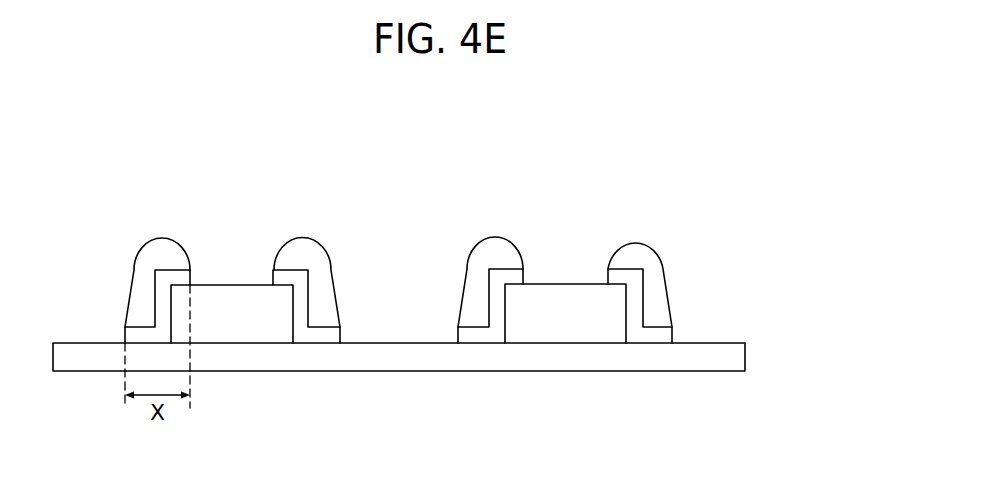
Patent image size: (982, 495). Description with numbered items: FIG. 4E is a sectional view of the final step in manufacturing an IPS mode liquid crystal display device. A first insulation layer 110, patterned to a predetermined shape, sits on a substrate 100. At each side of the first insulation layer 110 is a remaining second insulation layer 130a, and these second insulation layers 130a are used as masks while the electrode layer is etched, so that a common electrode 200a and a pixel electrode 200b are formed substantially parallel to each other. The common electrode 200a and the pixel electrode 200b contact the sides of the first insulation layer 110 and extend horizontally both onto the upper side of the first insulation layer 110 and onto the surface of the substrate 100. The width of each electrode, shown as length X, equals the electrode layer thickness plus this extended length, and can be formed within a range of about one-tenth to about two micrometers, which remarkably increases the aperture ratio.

The substrate 100 is at (732, 356).
The first insulation layer 110 is at (235, 328).
The second insulation layers 130a is at (157, 250).
The common electrode 200a is at (150, 332).
The pixel electrode 200b is at (317, 332).